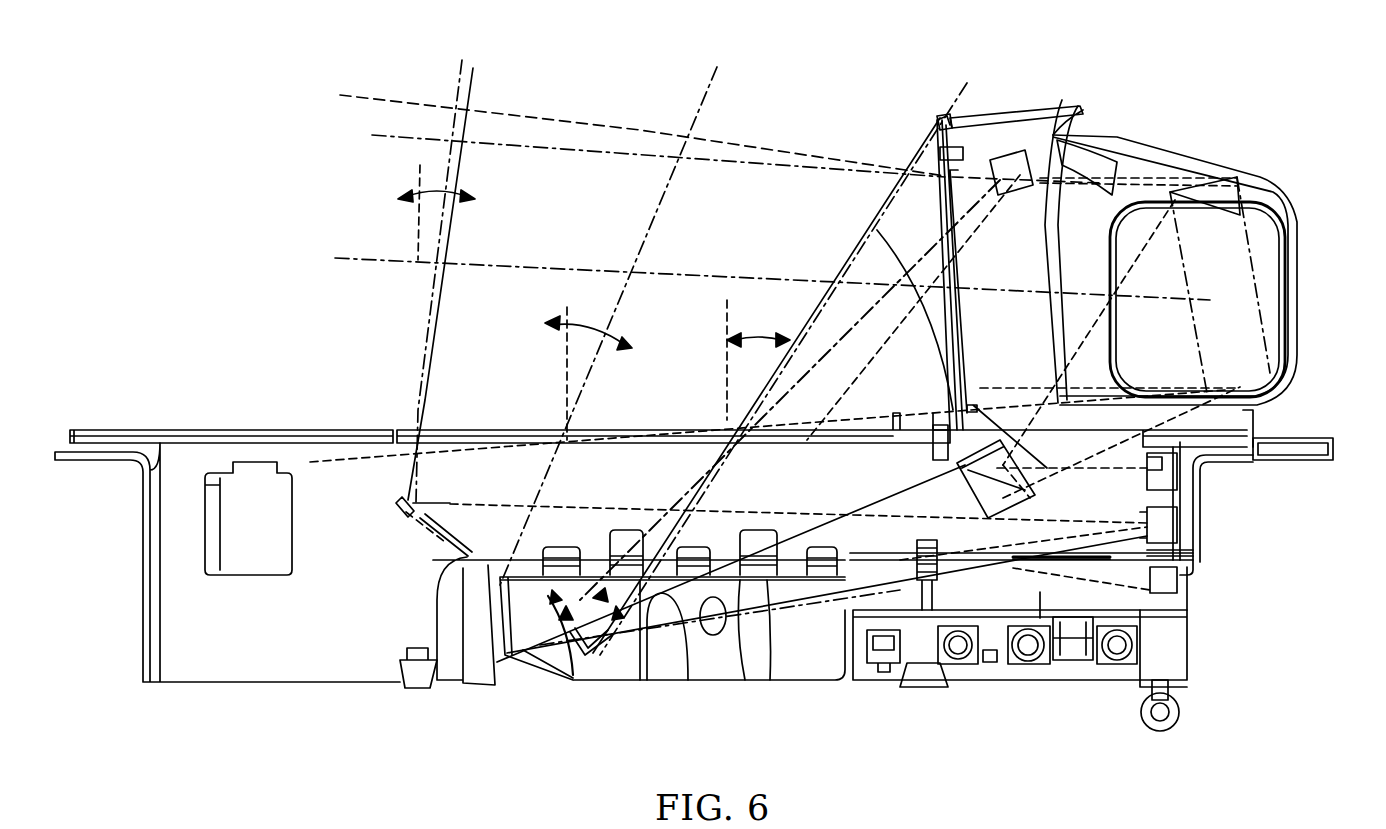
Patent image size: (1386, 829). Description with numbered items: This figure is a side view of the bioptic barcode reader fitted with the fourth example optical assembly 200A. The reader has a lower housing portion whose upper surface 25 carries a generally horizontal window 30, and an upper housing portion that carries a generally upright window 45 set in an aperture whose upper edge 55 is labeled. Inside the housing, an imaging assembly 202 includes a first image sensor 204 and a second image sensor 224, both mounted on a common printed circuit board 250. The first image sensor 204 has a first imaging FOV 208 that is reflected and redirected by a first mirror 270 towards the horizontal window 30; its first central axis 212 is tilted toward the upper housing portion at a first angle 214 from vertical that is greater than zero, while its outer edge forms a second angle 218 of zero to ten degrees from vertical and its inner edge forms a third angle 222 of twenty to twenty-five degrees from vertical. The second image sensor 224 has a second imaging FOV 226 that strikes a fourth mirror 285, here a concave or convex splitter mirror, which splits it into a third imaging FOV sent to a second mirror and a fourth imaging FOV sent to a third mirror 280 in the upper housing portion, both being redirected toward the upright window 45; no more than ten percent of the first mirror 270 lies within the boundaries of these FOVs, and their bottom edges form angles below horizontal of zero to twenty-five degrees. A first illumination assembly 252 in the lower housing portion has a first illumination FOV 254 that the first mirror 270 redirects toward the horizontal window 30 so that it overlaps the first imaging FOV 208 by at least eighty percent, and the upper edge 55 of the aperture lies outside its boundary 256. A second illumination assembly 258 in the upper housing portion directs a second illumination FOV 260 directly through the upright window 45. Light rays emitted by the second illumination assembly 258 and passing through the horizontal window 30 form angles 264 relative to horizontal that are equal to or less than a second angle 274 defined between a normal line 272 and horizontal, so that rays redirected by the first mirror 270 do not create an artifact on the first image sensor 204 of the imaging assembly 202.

The upper surface 25 is at (229, 430).
The horizontal window 30 is at (487, 432).
The upright window 45 is at (978, 257).
The upper edge of aperture 55 is at (935, 127).
The fourth example optical assembly 200A is at (1190, 470).
The imaging assembly 202 is at (1190, 498).
The first image sensor 204 is at (1185, 552).
The first imaging FOV 208 is at (1175, 570).
The first central axis 212 is at (705, 97).
The first angle 214 is at (570, 325).
The second angle 218 is at (430, 192).
The third angle 222 is at (763, 335).
The second image sensor 224 is at (1210, 455).
The second imaging FOV 226 is at (967, 400).
The common printed circuit board 250 is at (1180, 525).
The first illumination assembly 252 is at (1178, 585).
The first illumination FOV 254 is at (1060, 663).
The boundary of first illumination FOV 256 is at (460, 165).
The second illumination assembly 258 is at (1055, 125).
The second illumination FOV 260 is at (753, 160).
The angles of light rays relative to horizontal 264 is at (680, 627).
The first mirror 270 is at (428, 530).
The normal line 272 is at (578, 687).
The second angle 274 is at (525, 625).
The third mirror 280 is at (1210, 258).
The fourth mirror 285 is at (975, 487).